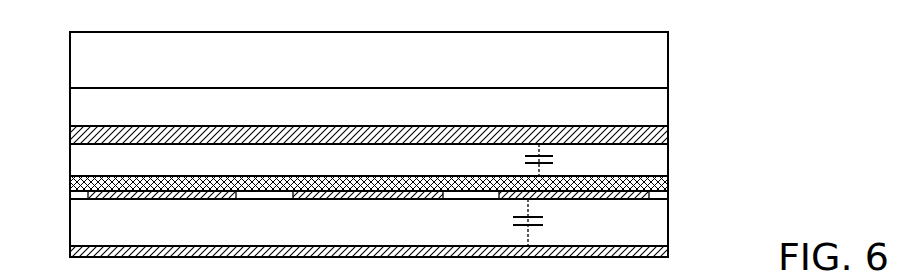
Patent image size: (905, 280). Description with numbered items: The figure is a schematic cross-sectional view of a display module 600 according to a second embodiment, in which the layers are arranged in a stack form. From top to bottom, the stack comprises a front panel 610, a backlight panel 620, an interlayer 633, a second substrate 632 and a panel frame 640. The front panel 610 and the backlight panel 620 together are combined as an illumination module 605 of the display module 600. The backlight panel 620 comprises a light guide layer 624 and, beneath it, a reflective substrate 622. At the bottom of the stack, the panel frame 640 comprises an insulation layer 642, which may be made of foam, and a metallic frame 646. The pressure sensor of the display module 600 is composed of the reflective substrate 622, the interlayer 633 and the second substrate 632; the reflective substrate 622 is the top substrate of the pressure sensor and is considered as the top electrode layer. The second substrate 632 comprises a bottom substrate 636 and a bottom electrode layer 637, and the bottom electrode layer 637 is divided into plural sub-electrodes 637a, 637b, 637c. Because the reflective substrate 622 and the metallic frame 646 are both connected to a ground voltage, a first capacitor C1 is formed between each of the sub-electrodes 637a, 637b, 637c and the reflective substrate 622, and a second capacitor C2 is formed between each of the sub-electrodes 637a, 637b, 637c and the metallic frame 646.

The display module 600 is at (727, 49).
The illumination module 605 is at (62, 32).
The front panel 610 is at (660, 80).
The backlight panel 620 is at (735, 101).
The reflective substrate 622 is at (668, 137).
The light guide layer 624 is at (668, 105).
The second substrate 632 is at (733, 172).
The interlayer 633 is at (660, 170).
The bottom substrate 636 is at (672, 179).
The bottom electrode layer 637 is at (397, 204).
The sub-electrode 637a is at (582, 200).
The sub-electrode 637b is at (342, 200).
The sub-electrode 637c is at (158, 200).
The panel frame 640 is at (62, 199).
The insulation layer 642 is at (668, 222).
The metallic frame 646 is at (668, 249).
The first capacitor C1 is at (525, 160).
The second capacitor C2 is at (512, 222).